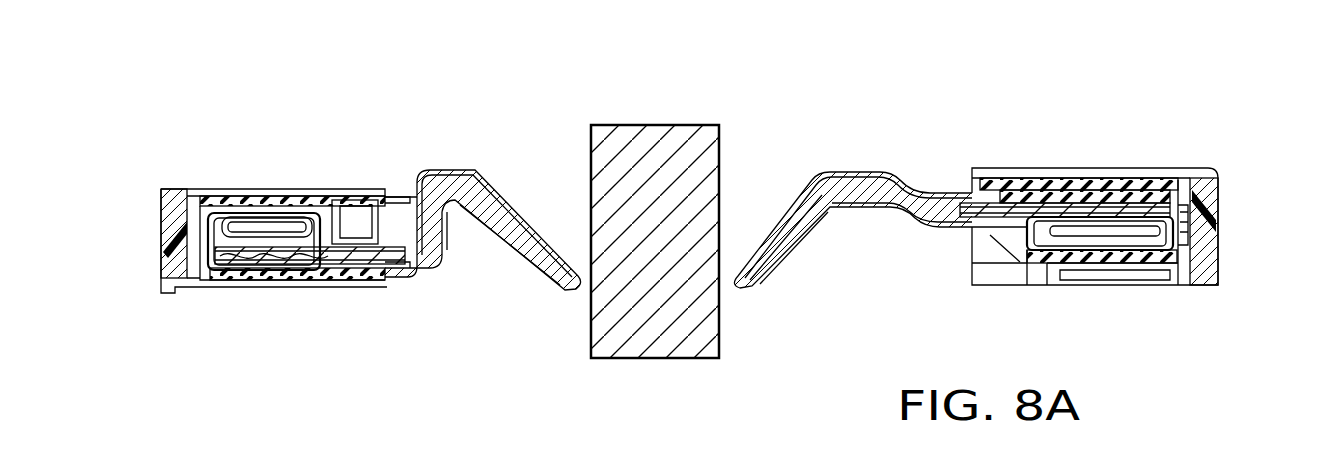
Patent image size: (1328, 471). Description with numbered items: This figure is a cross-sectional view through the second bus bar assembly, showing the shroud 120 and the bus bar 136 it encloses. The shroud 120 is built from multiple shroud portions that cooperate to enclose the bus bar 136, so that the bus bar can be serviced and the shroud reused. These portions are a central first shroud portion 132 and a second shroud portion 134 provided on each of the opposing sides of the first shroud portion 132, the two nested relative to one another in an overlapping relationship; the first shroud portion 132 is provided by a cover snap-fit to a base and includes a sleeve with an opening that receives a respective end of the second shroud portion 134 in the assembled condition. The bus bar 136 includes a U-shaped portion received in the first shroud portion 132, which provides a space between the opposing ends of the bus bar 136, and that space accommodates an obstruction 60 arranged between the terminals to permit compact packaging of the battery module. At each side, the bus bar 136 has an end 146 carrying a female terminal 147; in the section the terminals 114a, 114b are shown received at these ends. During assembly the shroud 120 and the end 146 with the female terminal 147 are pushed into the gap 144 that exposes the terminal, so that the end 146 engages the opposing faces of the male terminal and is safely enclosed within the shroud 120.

The obstruction 60 is at (700, 135).
The shroud 120 is at (708, 461).
The first shroud portion 132 is at (163, 190).
The second shroud portion 134 is at (793, 237).
The bus bar 136 is at (868, 180).
The gap 144 is at (1193, 224).
The end 146 is at (225, 277).
The female terminal 147 is at (310, 273).
The first bolt 114a is at (287, 245).
The second bolt 114b is at (1122, 228).